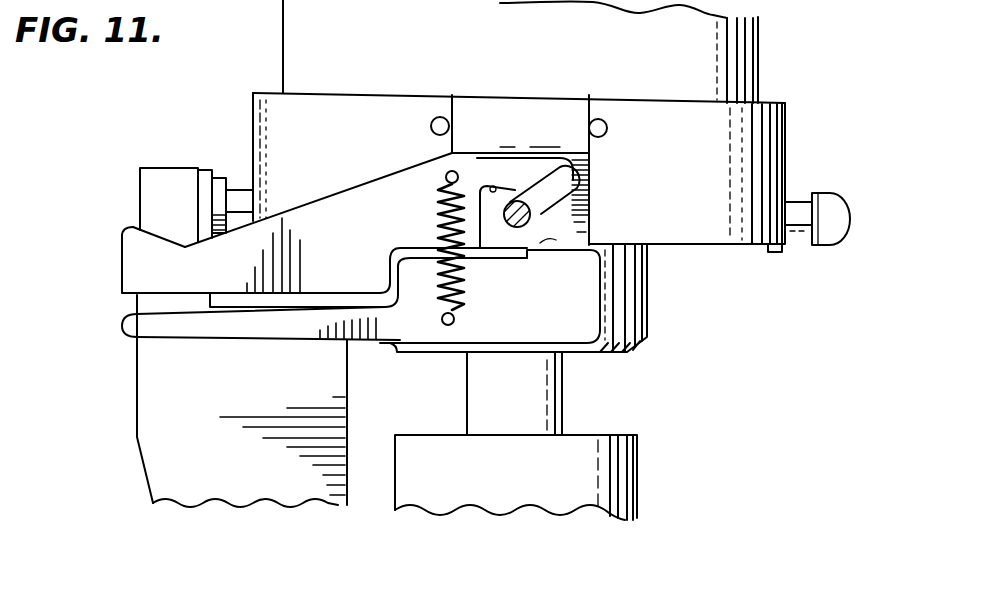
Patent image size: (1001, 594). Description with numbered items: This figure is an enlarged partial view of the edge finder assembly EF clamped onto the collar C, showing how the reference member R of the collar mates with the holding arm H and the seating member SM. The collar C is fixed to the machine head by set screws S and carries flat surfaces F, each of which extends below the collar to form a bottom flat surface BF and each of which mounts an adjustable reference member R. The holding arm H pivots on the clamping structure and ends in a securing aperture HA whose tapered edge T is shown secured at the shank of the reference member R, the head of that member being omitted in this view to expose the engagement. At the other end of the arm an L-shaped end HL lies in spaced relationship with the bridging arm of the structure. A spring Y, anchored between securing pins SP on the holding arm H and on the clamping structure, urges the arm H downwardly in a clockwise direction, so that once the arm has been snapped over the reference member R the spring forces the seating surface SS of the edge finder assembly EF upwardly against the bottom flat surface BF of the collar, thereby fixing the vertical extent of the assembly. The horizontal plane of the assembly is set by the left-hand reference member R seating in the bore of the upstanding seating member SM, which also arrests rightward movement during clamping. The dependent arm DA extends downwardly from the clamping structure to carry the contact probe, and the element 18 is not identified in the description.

The seating member SM is at (150, 167).
The reference member R is at (222, 178).
The L-shaped end HL is at (155, 232).
The holding arm H is at (313, 203).
The set screw S is at (431, 122).
The securing pin SP is at (452, 172).
The flat surface F is at (565, 100).
The securing aperture HA is at (492, 184).
The tapered edge T is at (525, 185).
The collar C is at (805, 113).
The bottom flat surface BF is at (543, 240).
The seating surface SS is at (578, 248).
The spring Y is at (463, 303).
The edge finder assembly EF is at (98, 304).
The dependent arm DA is at (227, 483).
The base member 18 is at (640, 462).